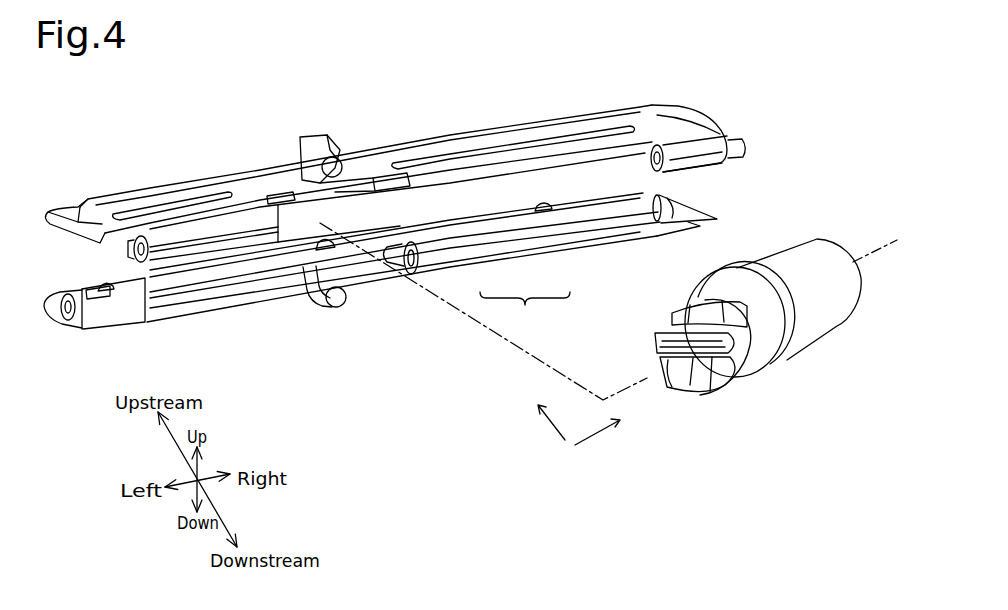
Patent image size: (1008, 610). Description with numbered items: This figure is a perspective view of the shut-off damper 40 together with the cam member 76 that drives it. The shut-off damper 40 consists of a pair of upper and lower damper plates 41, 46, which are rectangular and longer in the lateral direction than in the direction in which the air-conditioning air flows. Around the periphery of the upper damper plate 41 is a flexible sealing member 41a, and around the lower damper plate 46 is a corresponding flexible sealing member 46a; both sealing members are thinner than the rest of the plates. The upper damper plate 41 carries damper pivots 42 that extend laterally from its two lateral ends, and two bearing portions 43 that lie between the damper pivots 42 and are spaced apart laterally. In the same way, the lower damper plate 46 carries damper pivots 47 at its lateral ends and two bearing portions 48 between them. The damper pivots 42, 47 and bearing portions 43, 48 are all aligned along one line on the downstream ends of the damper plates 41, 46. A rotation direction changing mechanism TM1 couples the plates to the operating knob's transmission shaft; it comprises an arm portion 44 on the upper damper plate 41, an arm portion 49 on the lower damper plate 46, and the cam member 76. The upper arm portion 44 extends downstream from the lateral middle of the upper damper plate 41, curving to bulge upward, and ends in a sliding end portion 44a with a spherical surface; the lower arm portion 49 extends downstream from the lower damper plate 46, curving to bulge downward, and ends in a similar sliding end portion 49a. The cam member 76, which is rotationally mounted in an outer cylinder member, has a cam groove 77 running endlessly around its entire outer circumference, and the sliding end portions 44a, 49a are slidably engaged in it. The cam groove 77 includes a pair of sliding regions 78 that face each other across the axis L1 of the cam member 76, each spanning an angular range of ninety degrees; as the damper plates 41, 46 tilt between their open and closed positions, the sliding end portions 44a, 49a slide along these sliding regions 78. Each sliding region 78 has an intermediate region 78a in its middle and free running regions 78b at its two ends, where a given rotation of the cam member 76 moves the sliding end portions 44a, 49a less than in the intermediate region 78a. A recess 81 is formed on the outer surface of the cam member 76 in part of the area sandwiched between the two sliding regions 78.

The shut-off damper 40 is at (525, 316).
The upper damper plate 41 is at (493, 173).
The flexible sealing member 41a is at (58, 204).
The damper pivot 42 is at (130, 247).
The bearing portion 43 is at (243, 216).
The arm portion 44 is at (330, 140).
The sliding end portion 44a is at (340, 163).
The lower damper plate 46 is at (493, 253).
The flexible sealing member 46a is at (700, 230).
The damper pivot 47 is at (687, 203).
The bearing portion 48 is at (120, 317).
The arm portion 49 is at (310, 306).
The sliding end portion 49a is at (338, 312).
The cam member 76 is at (828, 325).
The cam groove 77 is at (757, 397).
The sliding region 78 is at (720, 320).
The intermediate region 78a is at (758, 312).
The free running region 78b is at (688, 322).
The recess 81 is at (667, 370).
The axis L1 is at (880, 250).
The rotation direction changing mechanism TM1 is at (483, 349).